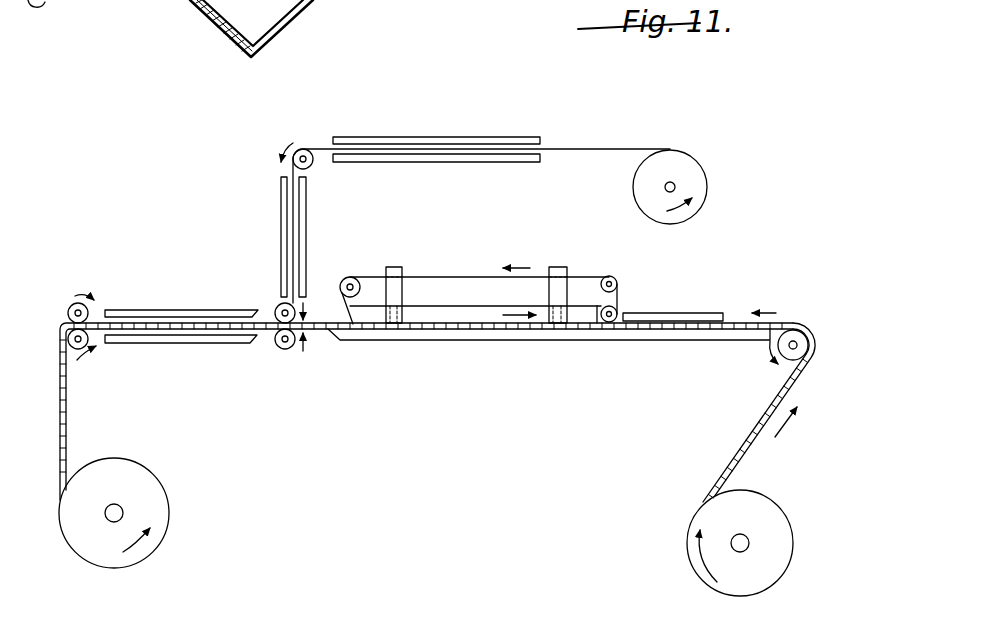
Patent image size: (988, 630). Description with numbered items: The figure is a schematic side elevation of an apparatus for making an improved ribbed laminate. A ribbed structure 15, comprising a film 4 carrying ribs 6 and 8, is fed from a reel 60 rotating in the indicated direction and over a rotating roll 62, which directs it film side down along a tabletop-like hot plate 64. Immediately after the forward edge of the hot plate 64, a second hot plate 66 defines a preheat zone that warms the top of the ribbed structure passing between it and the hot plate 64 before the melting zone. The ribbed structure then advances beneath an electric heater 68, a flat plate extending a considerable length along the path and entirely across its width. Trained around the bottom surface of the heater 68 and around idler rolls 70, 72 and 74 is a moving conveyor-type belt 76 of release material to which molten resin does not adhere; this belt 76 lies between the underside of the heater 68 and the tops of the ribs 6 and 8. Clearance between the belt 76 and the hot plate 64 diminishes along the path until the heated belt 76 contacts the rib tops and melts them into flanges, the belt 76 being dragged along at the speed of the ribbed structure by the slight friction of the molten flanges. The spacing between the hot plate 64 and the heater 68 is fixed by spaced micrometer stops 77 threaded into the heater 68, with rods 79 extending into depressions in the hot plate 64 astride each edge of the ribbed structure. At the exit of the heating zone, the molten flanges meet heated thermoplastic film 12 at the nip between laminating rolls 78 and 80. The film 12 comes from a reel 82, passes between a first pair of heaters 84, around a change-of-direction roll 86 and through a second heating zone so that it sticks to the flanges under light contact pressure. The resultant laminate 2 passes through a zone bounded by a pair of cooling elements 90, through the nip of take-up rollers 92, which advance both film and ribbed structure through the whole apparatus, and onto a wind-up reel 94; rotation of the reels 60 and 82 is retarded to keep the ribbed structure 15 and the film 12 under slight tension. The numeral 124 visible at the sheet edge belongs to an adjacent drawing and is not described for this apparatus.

The laminate 2 is at (70, 410).
The film 4 is at (721, 473).
The rib 6 is at (785, 385).
The rib 8 is at (781, 398).
The heated film 12 is at (588, 146).
The ribbed structure 15 is at (742, 430).
The reel 60 is at (793, 527).
The rotating roll 62 is at (800, 338).
The hot plate 64 is at (728, 336).
The second hot plate 66 is at (709, 300).
The electric heater 68 is at (432, 318).
The idler roll 70 is at (351, 277).
The idler roll 72 is at (617, 281).
The idler roll 74 is at (618, 311).
The conveyor-type belt 76 is at (343, 297).
The micrometer stops 77 is at (400, 268).
The laminating roll 78 is at (278, 305).
The rods 79 is at (393, 330).
The laminating roll 80 is at (283, 351).
The reel 82 is at (692, 178).
The first pair of heaters 84 is at (430, 157).
The change-of-direction roll 86 is at (308, 150).
The cooling elements 90 is at (152, 337).
The take-up rollers 92 is at (68, 313).
The wind-up reel 94 is at (147, 490).
The element 124 is at (40, 6).